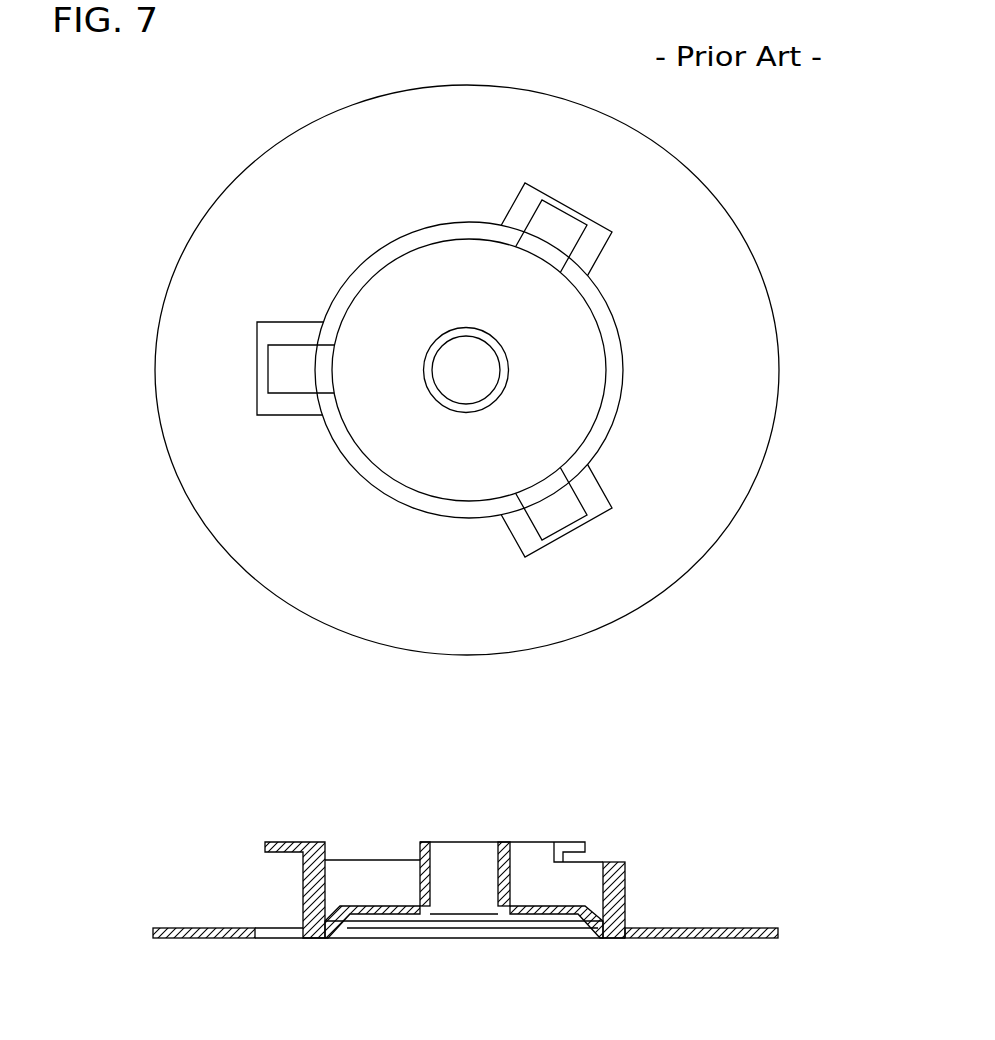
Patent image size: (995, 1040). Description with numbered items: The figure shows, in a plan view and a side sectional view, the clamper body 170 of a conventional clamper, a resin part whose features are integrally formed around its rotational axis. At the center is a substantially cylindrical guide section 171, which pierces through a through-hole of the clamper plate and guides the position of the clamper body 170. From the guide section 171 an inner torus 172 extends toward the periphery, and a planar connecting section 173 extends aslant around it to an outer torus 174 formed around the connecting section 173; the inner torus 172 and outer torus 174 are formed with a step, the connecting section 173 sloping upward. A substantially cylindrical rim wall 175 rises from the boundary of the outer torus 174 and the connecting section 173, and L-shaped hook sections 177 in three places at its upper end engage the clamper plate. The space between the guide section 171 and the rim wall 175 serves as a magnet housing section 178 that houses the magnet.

The clamper body 170 is at (742, 432).
The guide section 171 is at (498, 402).
The inner torus 172 is at (385, 412).
The connecting section 173 is at (590, 920).
The outer torus 174 is at (270, 233).
The rim wall 175 is at (580, 455).
The L-shaped hook sections 177 is at (558, 228).
The magnet housing section 178 is at (578, 360).